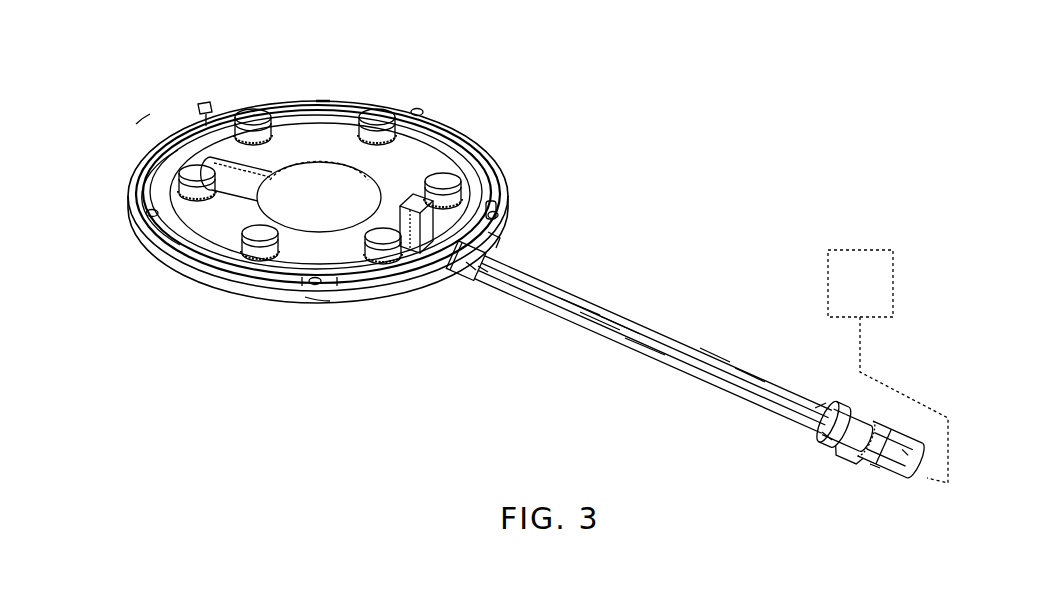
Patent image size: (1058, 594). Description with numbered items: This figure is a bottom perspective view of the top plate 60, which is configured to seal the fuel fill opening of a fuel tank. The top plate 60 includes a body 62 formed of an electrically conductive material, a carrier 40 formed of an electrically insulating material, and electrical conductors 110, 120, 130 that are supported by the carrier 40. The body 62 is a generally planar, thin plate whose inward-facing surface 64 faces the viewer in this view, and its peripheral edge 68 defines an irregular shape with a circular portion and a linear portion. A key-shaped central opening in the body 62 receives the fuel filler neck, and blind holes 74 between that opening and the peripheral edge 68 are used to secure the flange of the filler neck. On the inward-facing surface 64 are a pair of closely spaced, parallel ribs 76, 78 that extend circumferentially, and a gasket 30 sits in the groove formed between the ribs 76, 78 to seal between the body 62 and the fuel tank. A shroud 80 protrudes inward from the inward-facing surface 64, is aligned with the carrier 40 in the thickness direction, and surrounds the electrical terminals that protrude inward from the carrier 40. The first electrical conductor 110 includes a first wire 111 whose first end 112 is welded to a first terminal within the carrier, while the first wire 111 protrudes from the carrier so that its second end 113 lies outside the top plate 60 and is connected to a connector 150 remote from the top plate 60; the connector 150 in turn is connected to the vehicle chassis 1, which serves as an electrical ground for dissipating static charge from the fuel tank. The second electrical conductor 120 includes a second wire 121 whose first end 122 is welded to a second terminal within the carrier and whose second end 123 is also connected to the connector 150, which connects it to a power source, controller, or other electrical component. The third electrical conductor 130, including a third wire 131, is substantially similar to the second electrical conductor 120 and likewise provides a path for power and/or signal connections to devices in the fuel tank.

The top plate 60 is at (306, 39).
The body 62 is at (458, 122).
The inward-facing surface 64 is at (325, 142).
The peripheral edge 68 is at (321, 300).
The blind holes 74 is at (208, 102).
The rib 76 is at (163, 120).
The rib 78 is at (182, 110).
The gasket 30 is at (343, 182).
The shroud 80 is at (503, 232).
The carrier 40 is at (494, 249).
The first electrical conductor 110 is at (597, 330).
The first wire 111 is at (648, 352).
The first end 112 is at (473, 280).
The second end 113 is at (817, 424).
The second electrical conductor 120 is at (594, 306).
The second wire 121 is at (628, 320).
The first end 122 is at (487, 290).
The second end 123 is at (810, 407).
The third electrical conductor 130 is at (710, 362).
The third wire 131 is at (748, 378).
The connector 150 is at (872, 468).
The vehicle chassis 1 is at (850, 250).